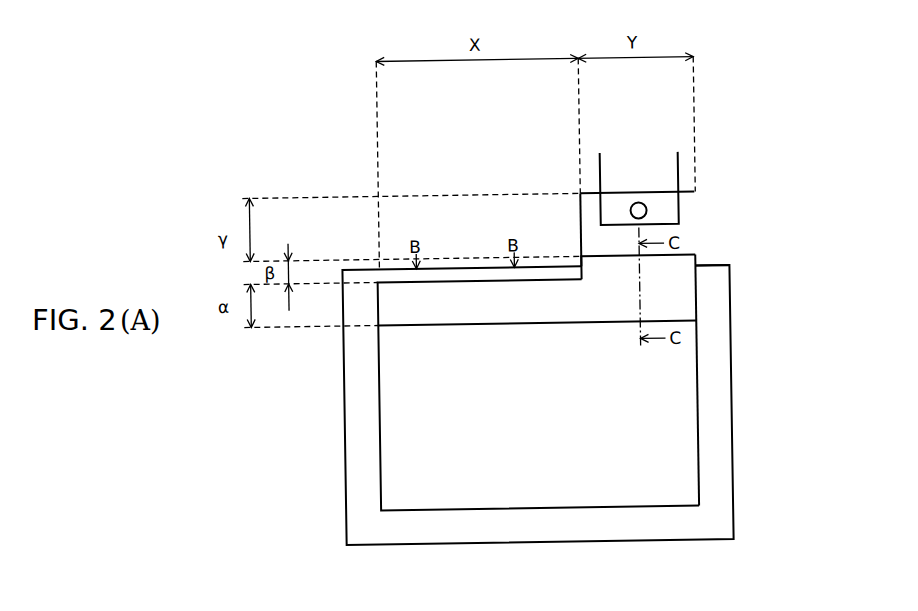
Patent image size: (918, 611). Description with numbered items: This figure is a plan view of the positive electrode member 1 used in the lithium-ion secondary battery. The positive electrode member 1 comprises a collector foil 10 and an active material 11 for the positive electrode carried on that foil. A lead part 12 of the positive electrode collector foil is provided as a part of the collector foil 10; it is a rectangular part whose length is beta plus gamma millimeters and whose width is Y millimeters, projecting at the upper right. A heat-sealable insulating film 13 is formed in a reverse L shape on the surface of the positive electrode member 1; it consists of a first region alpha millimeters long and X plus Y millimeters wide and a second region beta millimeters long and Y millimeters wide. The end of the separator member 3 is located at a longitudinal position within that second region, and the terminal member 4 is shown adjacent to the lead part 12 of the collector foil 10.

The positive electrode member 1 is at (682, 411).
The separator member 3 is at (707, 268).
The terminal member 4 is at (681, 170).
The collector foil 10 is at (692, 207).
The active material 11 is at (538, 394).
The lead part 12 is at (582, 214).
The heat-sealable insulating film 13 is at (698, 309).